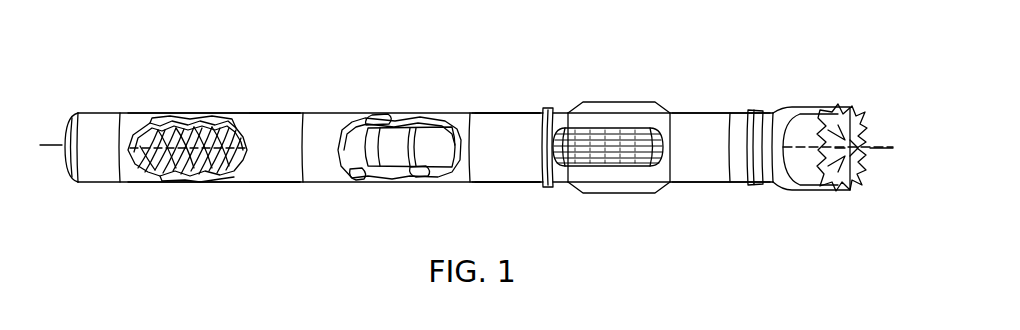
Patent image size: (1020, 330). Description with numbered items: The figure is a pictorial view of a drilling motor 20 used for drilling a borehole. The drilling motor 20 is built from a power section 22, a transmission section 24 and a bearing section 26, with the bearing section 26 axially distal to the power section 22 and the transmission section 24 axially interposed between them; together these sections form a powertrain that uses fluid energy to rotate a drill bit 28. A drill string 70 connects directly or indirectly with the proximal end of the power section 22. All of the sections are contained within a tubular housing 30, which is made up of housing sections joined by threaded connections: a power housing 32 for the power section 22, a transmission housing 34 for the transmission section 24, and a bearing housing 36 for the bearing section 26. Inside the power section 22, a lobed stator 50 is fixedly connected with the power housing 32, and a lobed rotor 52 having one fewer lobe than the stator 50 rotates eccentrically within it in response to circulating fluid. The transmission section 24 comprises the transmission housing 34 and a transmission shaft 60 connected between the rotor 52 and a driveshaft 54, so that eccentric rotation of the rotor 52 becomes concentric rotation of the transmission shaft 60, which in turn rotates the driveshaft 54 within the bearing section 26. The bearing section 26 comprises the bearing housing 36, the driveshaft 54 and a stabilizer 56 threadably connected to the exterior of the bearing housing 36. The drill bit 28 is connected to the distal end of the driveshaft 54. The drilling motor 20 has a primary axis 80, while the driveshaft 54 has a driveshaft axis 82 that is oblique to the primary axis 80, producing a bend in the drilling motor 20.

The drilling motor 20 is at (515, 92).
The power section 22 is at (145, 96).
The transmission section 24 is at (388, 96).
The bearing section 26 is at (661, 89).
The drill bit 28 is at (853, 106).
The tubular housing 30 is at (257, 108).
The power housing 32 is at (268, 168).
The transmission housing 34 is at (341, 172).
The bearing housing 36 is at (512, 176).
The stator 50 is at (163, 178).
The rotor 52 is at (190, 150).
The driveshaft 54 is at (768, 114).
The stabilizer 56 is at (623, 108).
The transmission shaft 60 is at (405, 142).
The drill string 70 is at (78, 108).
The primary axis 80 is at (53, 148).
The driveshaft axis 82 is at (880, 150).